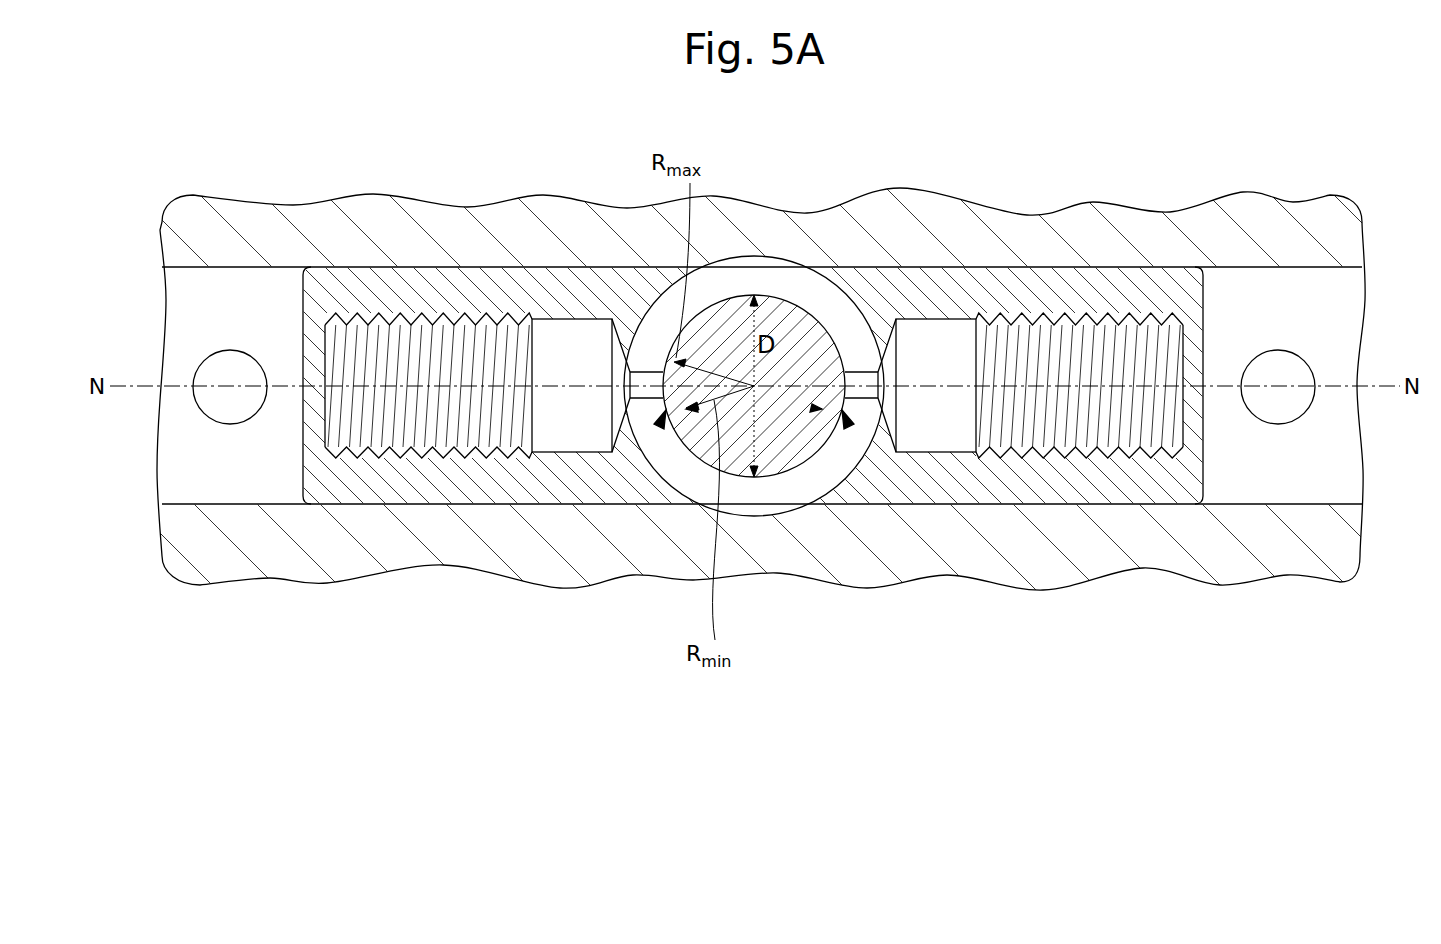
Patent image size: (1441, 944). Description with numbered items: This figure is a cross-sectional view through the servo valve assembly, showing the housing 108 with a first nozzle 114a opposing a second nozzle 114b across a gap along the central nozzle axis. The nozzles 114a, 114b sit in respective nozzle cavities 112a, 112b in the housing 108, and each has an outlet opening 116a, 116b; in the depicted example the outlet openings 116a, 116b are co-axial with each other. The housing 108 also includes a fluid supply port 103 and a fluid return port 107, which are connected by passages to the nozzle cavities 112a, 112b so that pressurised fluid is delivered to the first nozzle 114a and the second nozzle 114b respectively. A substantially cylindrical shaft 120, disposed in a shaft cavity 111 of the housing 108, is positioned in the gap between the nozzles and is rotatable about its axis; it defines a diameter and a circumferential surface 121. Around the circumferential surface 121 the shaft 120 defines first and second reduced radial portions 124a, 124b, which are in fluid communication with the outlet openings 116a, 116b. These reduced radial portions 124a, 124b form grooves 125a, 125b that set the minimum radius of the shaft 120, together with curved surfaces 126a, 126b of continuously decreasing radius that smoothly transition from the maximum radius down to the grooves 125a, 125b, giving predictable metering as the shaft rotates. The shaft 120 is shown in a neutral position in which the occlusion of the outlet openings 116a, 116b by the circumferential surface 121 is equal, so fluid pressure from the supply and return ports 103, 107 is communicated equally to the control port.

The fluid supply port 103 is at (205, 370).
The fluid return port 107 is at (1300, 368).
The housing 108 is at (430, 543).
The shaft cavity 111 is at (752, 257).
The nozzle cavity 112a is at (188, 461).
The nozzle cavity 112b is at (1315, 468).
The first nozzle 114a is at (427, 287).
The second nozzle 114b is at (1082, 283).
The outlet opening 116a is at (622, 362).
The outlet opening 116b is at (888, 345).
The shaft 120 is at (788, 455).
The circumferential surface 121 is at (766, 298).
The first reduced radial portion 124a is at (662, 418).
The second reduced radial portion 124b is at (845, 420).
The groove 125a is at (688, 414).
The groove 125b is at (826, 413).
The curved surface 126a is at (656, 366).
The curved surface 126b is at (855, 370).